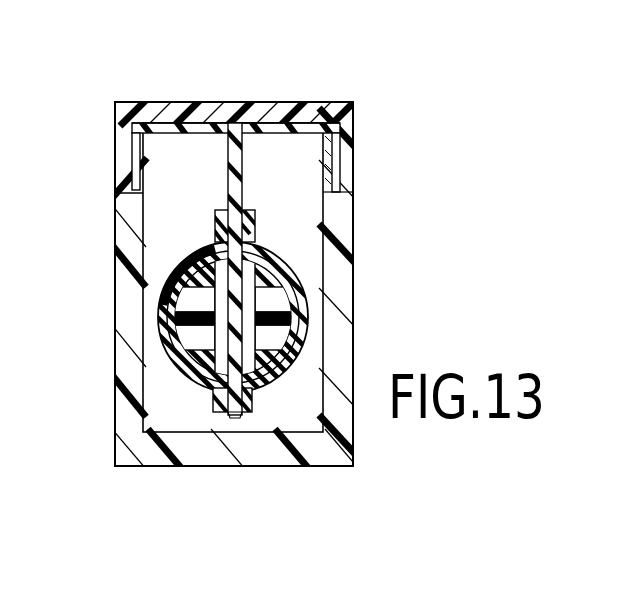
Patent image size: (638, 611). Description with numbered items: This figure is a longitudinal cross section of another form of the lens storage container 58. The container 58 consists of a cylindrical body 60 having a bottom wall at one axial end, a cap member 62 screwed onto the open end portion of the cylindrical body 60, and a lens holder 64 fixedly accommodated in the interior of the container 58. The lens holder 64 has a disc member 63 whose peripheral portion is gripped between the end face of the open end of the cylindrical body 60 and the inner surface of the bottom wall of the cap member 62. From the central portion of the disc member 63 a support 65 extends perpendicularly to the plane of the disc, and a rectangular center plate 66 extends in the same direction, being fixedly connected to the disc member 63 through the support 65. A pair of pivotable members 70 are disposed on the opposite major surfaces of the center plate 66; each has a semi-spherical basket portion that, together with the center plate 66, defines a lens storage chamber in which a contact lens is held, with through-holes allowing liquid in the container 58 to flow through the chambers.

The lens storage container 58 is at (386, 107).
The cylindrical body 60 is at (128, 307).
The cap member 62 is at (126, 114).
The disc member 63 is at (170, 128).
The lens holder 64 is at (235, 319).
The support 65 is at (232, 192).
The center plate 66 is at (235, 413).
The pivotable member 70 is at (272, 243).